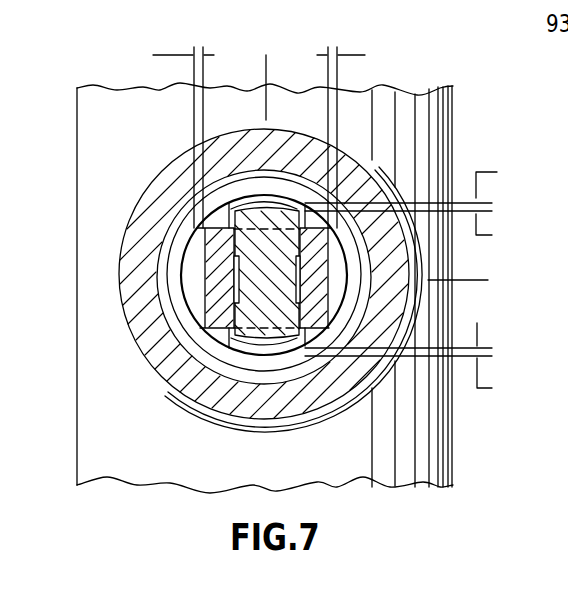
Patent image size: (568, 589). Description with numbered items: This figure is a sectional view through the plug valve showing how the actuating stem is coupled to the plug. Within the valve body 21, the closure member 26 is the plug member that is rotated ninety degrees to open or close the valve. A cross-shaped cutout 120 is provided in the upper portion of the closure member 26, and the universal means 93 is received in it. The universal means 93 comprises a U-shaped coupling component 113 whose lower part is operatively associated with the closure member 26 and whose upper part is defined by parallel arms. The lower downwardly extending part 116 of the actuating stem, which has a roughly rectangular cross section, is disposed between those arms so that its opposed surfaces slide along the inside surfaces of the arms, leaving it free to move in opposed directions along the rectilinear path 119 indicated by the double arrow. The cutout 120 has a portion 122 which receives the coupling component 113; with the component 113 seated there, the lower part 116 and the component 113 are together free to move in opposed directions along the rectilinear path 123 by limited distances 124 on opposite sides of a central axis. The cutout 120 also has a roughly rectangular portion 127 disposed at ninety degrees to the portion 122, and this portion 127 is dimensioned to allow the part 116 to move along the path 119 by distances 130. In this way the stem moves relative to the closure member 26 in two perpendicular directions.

The valve body 21 is at (116, 257).
The closure member 26 is at (200, 336).
The universal means 93 is at (375, 171).
The U-shaped coupling component 113 is at (334, 270).
The lower downwardly extending part of the stem 116 is at (243, 312).
The rectilinear path 119 is at (272, 66).
The cross-shaped cutout 120 is at (177, 284).
The portion of the cutout 122 is at (228, 226).
The rectilinear path 123 is at (458, 281).
The limited distances 124 is at (259, 134).
The roughly rectangular portion of the cutout 127 is at (233, 350).
The distances 130 is at (421, 281).